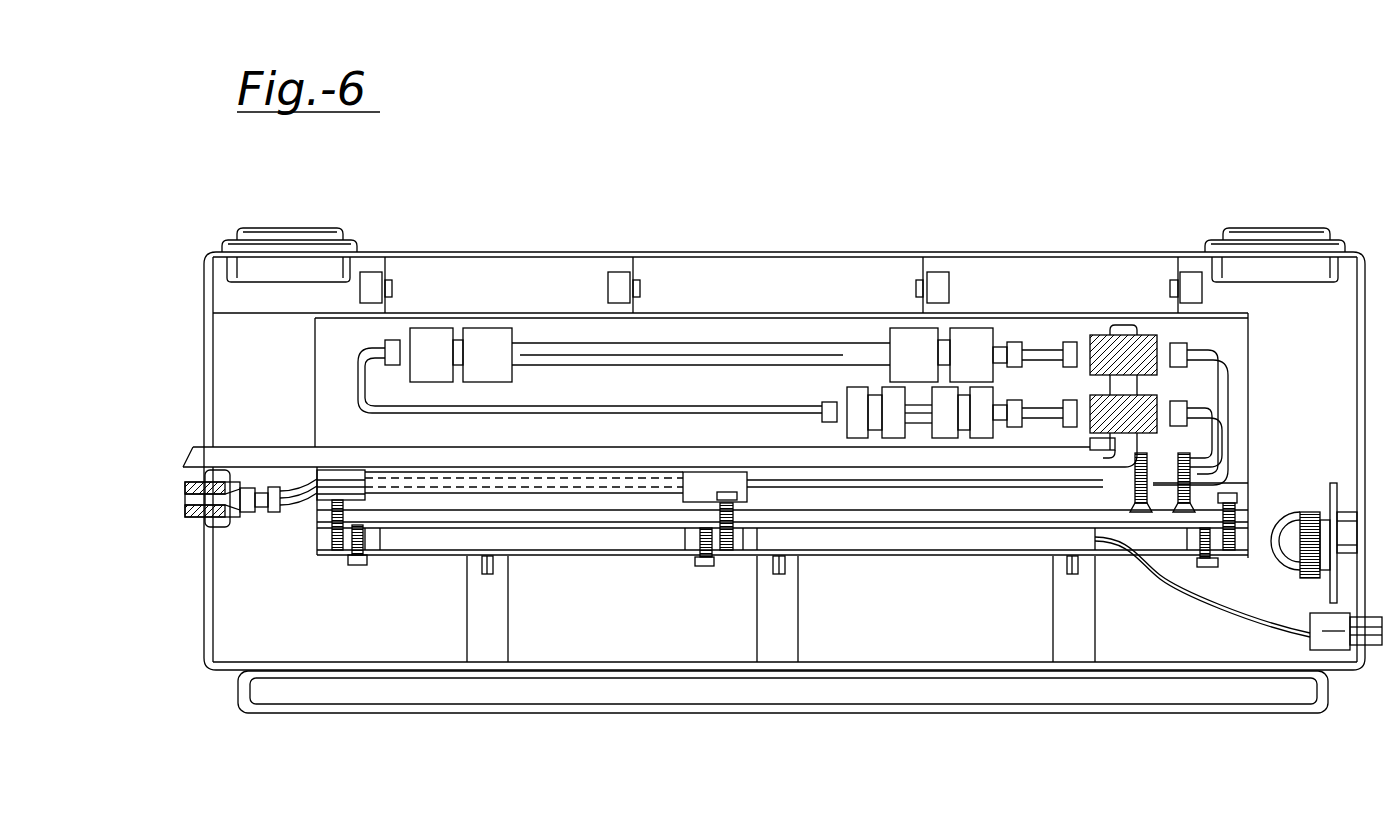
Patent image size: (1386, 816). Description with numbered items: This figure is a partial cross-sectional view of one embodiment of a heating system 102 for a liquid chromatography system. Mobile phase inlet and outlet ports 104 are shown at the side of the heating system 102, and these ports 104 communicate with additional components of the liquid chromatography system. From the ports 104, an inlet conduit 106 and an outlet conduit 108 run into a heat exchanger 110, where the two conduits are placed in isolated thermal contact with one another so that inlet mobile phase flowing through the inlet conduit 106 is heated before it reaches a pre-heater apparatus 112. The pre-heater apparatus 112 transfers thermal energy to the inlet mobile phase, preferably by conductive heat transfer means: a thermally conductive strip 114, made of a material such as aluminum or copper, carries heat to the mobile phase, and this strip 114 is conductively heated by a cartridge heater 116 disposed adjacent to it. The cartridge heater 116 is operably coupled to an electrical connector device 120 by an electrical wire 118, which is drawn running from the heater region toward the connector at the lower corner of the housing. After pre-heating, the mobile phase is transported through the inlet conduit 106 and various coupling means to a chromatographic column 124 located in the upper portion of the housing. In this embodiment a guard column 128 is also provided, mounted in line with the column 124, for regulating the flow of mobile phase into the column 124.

The heating system 102 is at (1014, 238).
The mobile phase inlet and outlet ports 104 is at (192, 518).
The inlet conduit 106 is at (305, 468).
The outlet conduit 108 is at (298, 500).
The heat exchanger 110 is at (568, 468).
The pre-heater apparatus 112 is at (828, 487).
The thermally conductive strip 114 is at (905, 503).
The cartridge heater 116 is at (1018, 543).
The electrical wire 118 is at (1195, 600).
The electrical connector device 120 is at (1342, 650).
The chromatographic column 124 is at (705, 342).
The guard column 128 is at (920, 400).